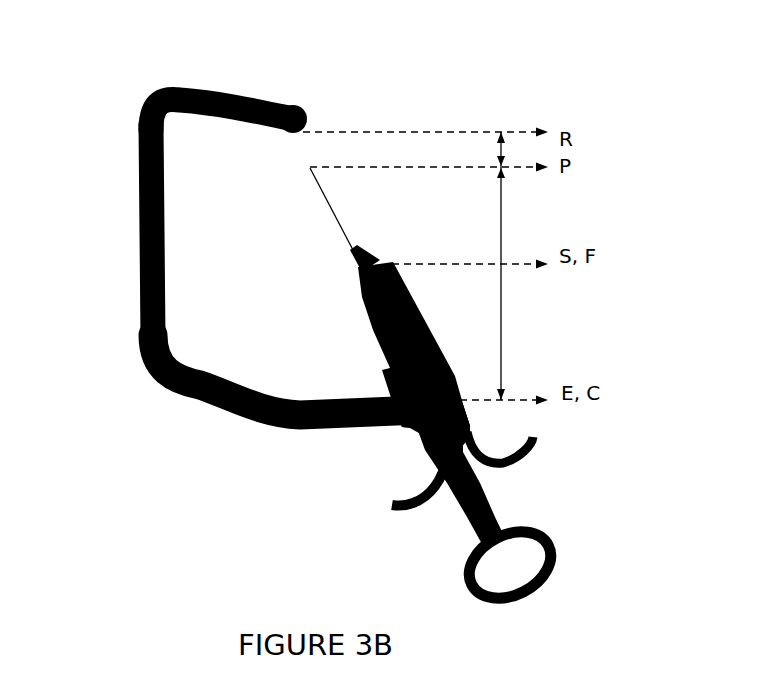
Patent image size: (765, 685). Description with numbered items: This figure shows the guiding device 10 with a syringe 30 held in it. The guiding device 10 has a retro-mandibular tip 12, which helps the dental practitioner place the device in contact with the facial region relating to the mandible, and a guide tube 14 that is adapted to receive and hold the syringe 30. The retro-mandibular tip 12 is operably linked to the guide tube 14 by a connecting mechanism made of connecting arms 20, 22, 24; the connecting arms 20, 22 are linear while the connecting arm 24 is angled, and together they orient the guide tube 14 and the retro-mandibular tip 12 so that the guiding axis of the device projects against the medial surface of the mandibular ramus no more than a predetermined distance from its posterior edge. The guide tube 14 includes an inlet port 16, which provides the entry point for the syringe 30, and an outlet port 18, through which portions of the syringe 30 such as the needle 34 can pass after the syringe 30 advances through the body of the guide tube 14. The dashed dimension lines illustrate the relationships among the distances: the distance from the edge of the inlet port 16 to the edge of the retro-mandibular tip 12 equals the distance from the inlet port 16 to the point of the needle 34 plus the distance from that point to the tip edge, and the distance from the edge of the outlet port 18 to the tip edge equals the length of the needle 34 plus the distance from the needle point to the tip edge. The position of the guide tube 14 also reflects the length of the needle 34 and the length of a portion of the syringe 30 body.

The guiding device 10 is at (235, 269).
The retro-mandibular tip 12 is at (300, 103).
The guide tube 14 is at (397, 417).
The inlet port 16 is at (455, 408).
The outlet port 18 is at (353, 283).
The connecting arm 20 is at (212, 93).
The connecting arm 22 is at (140, 243).
The connecting arm 24 is at (255, 424).
The syringe 30 is at (477, 521).
The needle 34 is at (328, 208).